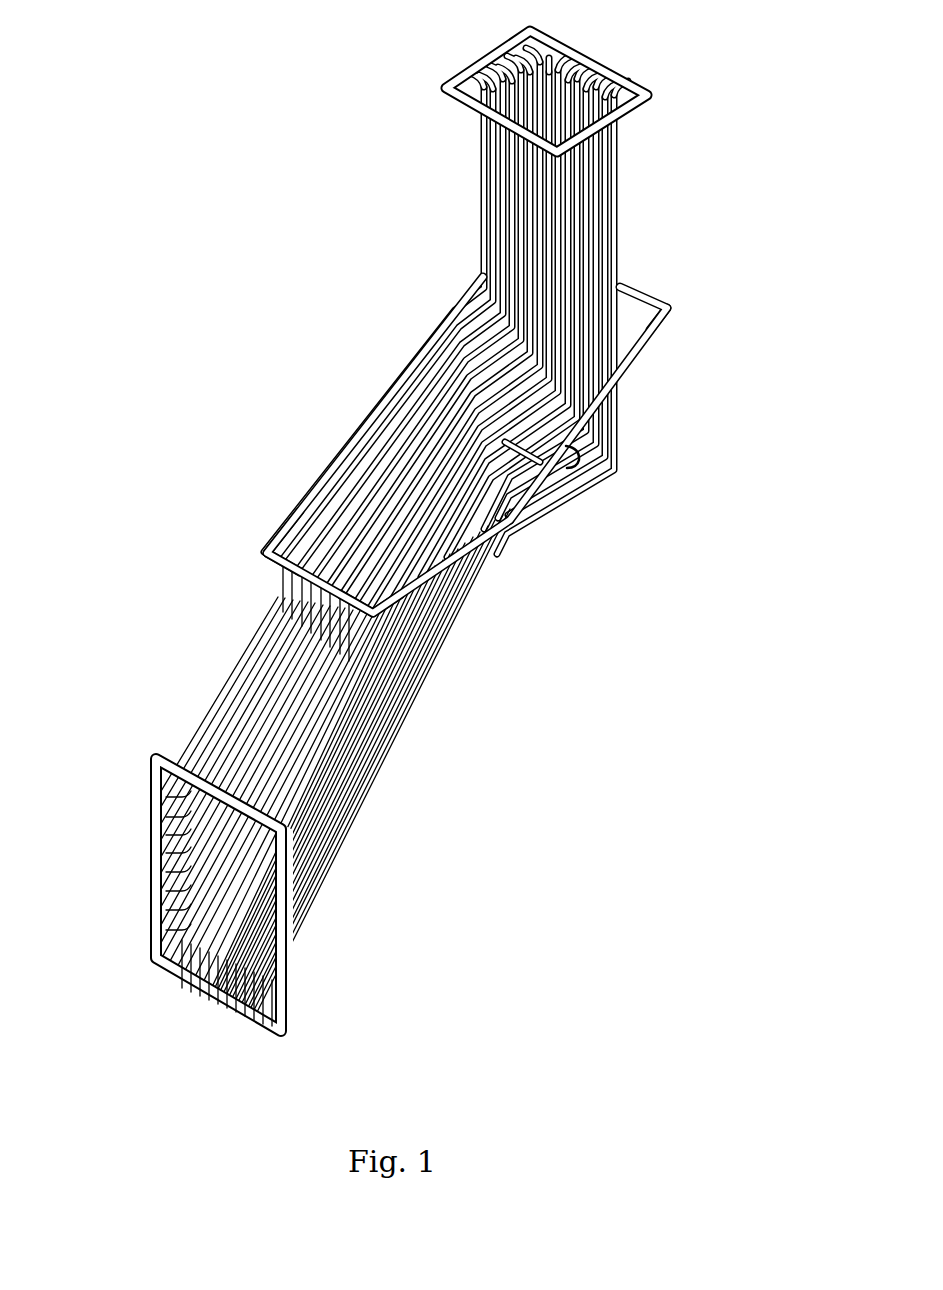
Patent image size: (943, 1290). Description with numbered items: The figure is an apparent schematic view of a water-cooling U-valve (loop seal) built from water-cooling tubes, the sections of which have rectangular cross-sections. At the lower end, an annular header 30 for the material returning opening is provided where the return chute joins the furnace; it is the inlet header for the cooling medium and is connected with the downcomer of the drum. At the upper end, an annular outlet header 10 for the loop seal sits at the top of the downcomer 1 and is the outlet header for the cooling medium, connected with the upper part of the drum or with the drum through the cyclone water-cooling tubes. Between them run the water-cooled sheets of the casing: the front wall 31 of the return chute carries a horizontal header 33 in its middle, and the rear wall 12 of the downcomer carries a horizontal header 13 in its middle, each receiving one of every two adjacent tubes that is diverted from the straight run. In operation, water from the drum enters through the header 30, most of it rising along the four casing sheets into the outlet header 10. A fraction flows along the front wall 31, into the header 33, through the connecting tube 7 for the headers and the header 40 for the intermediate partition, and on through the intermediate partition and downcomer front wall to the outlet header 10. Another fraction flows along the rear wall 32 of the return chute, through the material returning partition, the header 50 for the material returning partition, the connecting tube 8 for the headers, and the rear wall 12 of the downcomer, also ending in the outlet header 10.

The downcomer 1 is at (495, 212).
The connecting tube for the headers 7 is at (403, 600).
The connecting tube for the headers 8 is at (611, 388).
The outlet header for the loop seal 10 is at (447, 92).
The rear wall of the downcomer 12 is at (580, 87).
The header for the rear wall of the downcomer 13 is at (657, 297).
The header for the material returning opening 30 is at (287, 987).
The front wall of the return chute 31 is at (277, 667).
The rear wall of the return chute 32 is at (210, 957).
The header for the front wall of the return chute 33 is at (282, 557).
The header for the intermediate partition 40 is at (578, 445).
The header for the material returning partition 50 is at (507, 450).